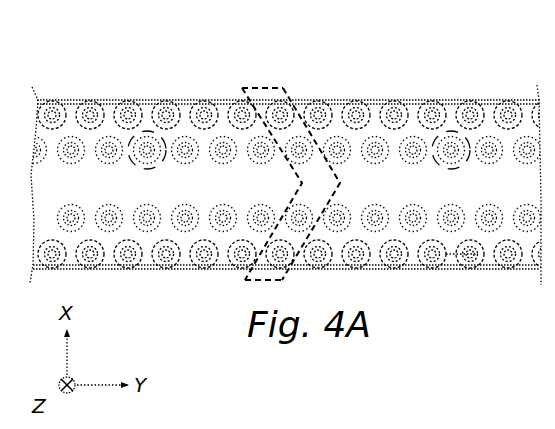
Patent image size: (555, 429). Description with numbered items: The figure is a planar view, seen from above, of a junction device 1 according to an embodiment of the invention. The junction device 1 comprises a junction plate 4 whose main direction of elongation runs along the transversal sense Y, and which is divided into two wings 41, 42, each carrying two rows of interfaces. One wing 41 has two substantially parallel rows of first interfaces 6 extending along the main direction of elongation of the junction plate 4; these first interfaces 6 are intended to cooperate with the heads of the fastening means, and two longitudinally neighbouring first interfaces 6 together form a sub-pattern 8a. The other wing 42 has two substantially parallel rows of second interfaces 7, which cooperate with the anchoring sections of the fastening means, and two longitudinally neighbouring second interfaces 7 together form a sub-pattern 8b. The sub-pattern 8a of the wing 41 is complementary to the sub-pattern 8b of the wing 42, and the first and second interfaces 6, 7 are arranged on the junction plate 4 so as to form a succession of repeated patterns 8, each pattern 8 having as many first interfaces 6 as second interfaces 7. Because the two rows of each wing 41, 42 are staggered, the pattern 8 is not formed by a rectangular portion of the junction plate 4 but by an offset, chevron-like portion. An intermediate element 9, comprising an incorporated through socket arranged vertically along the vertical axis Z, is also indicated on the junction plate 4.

The junction device 1 is at (82, 66).
The junction plate 4 is at (147, 97).
The wing 41 is at (368, 81).
The wing 42 is at (415, 270).
The first interface 6 is at (509, 99).
The second interface 7 is at (449, 268).
The pattern 8 is at (250, 84).
The sub-pattern 8a is at (286, 85).
The sub-pattern 8b is at (247, 282).
The intermediate element 9 is at (452, 131).